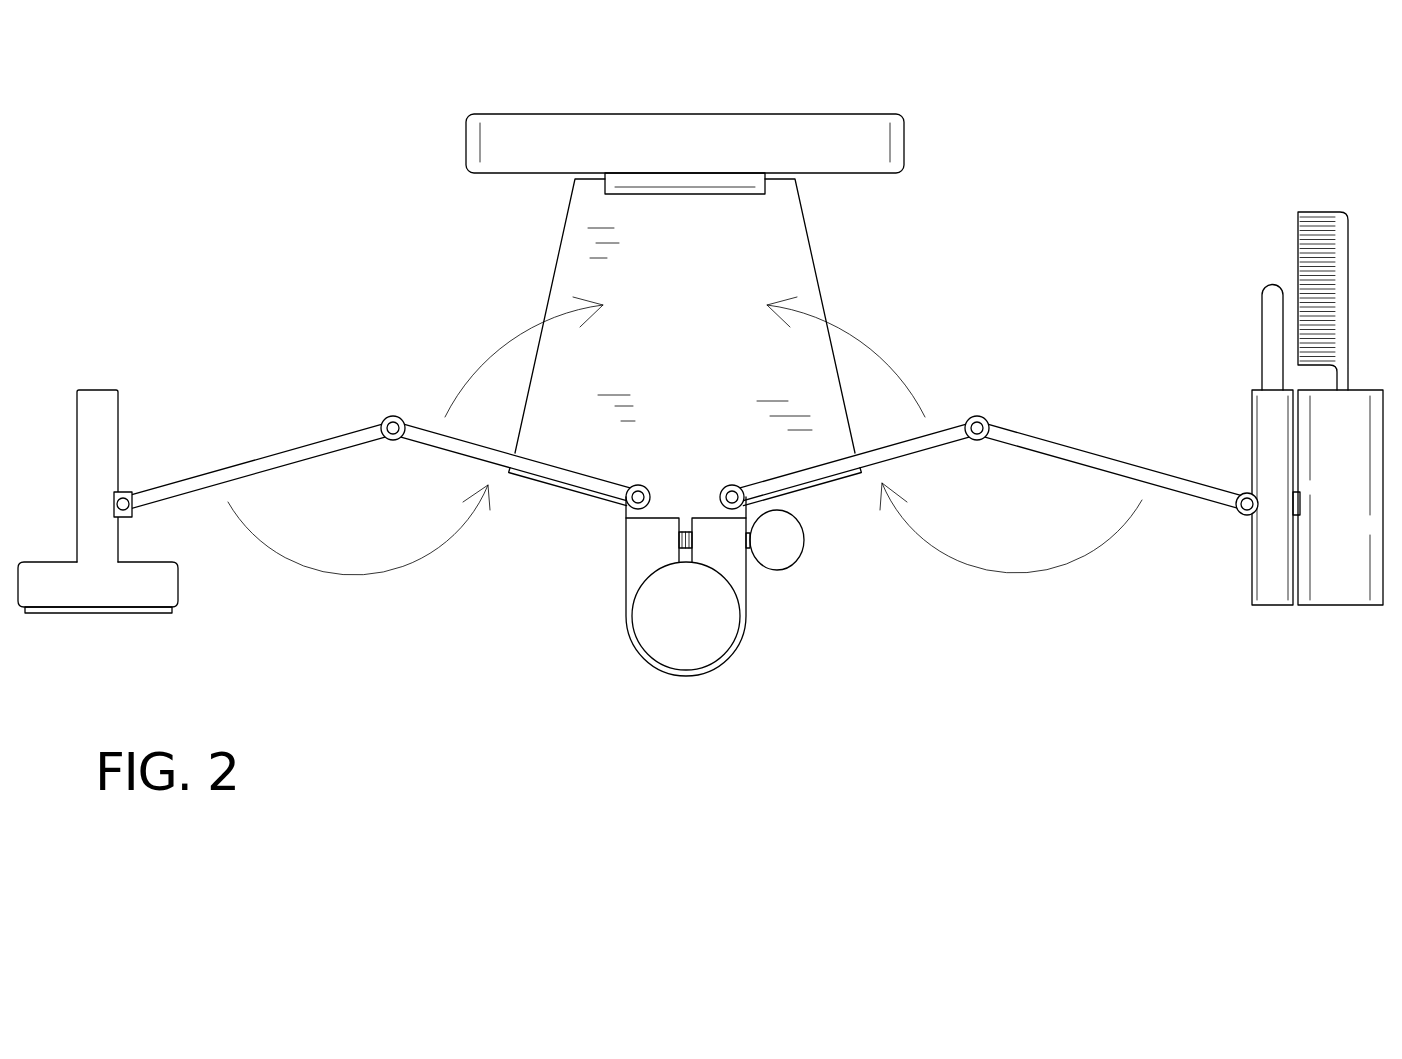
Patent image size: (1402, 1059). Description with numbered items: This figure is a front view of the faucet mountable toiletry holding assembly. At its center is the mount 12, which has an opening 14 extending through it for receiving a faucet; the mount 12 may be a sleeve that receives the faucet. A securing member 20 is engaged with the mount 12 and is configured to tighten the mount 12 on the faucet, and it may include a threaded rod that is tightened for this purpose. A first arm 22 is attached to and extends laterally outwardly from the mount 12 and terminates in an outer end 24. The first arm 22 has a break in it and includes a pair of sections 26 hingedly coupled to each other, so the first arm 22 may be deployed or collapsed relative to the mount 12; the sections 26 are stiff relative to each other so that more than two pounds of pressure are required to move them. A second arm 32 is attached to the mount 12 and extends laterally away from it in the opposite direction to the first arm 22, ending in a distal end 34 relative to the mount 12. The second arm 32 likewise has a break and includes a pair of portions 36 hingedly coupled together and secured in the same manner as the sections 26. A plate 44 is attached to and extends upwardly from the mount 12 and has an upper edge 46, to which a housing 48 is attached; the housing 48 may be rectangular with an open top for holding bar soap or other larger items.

The mount 12 is at (636, 650).
The opening 14 is at (733, 641).
The securing member 20 is at (684, 552).
The first arm 22 is at (984, 453).
The outer end 24 is at (1240, 512).
The pair of sections 26 is at (935, 448).
The second arm 32 is at (385, 472).
The distal end 34 is at (127, 493).
The pair of portions 36 is at (445, 447).
The plate 44 is at (810, 252).
The upper edge 46 is at (778, 180).
The housing 48 is at (905, 147).